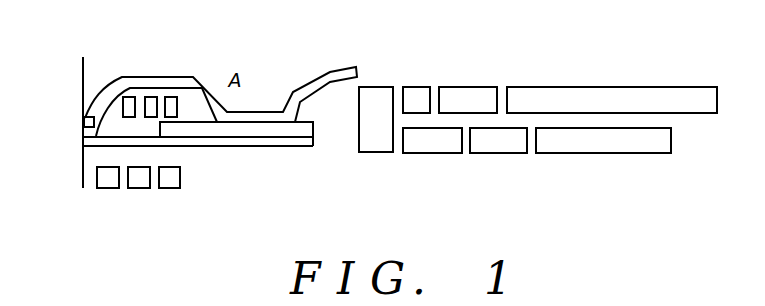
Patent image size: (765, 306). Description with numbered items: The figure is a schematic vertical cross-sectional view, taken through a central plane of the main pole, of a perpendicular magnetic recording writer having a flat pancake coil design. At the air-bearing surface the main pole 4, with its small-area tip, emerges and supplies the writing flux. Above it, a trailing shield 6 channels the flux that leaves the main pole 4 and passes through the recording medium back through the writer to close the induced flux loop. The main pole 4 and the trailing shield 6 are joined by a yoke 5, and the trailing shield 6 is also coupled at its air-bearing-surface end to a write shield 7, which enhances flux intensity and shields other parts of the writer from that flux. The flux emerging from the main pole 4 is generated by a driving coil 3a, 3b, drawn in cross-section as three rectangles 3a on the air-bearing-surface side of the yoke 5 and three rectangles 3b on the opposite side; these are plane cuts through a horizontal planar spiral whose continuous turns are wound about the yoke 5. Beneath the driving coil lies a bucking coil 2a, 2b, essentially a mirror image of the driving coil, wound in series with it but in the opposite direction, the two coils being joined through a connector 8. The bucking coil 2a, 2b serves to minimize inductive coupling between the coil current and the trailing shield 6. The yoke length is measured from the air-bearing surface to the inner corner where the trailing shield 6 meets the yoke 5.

The bucking coil 2a is at (138, 188).
The bucking coil 2b is at (487, 167).
The driving coil 3a is at (148, 96).
The driving coil 3b is at (442, 78).
The main pole 4 is at (83, 146).
The yoke 5 is at (313, 134).
The trailing shield 6 is at (119, 86).
The write shield 7 is at (84, 122).
The connector 8 is at (365, 153).